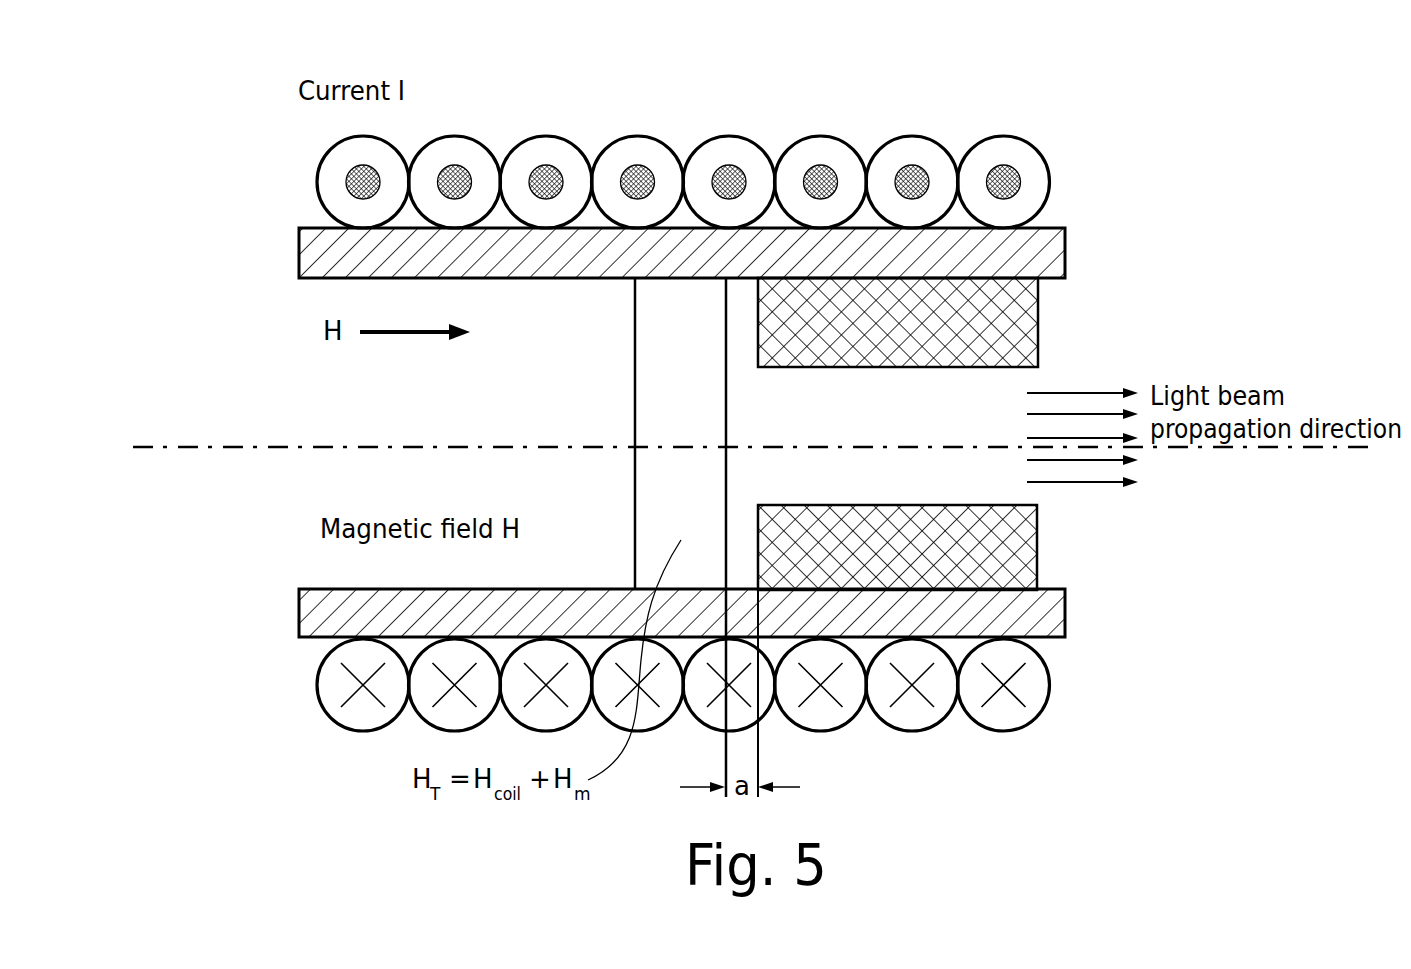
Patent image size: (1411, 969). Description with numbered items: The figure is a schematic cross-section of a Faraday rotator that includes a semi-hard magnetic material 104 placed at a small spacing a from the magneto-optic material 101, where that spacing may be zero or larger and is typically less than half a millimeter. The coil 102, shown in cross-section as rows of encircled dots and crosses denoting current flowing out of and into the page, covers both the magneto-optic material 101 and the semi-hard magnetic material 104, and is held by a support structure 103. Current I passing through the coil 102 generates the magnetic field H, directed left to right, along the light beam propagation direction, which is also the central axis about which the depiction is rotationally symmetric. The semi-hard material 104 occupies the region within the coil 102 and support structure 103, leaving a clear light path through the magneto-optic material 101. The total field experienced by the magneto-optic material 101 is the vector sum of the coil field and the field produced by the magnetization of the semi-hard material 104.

The magneto-optic material 101 is at (635, 360).
The coil 102 is at (1037, 178).
The support structure 103 is at (1035, 255).
The semi-hard magnetic material 104 is at (1013, 548).